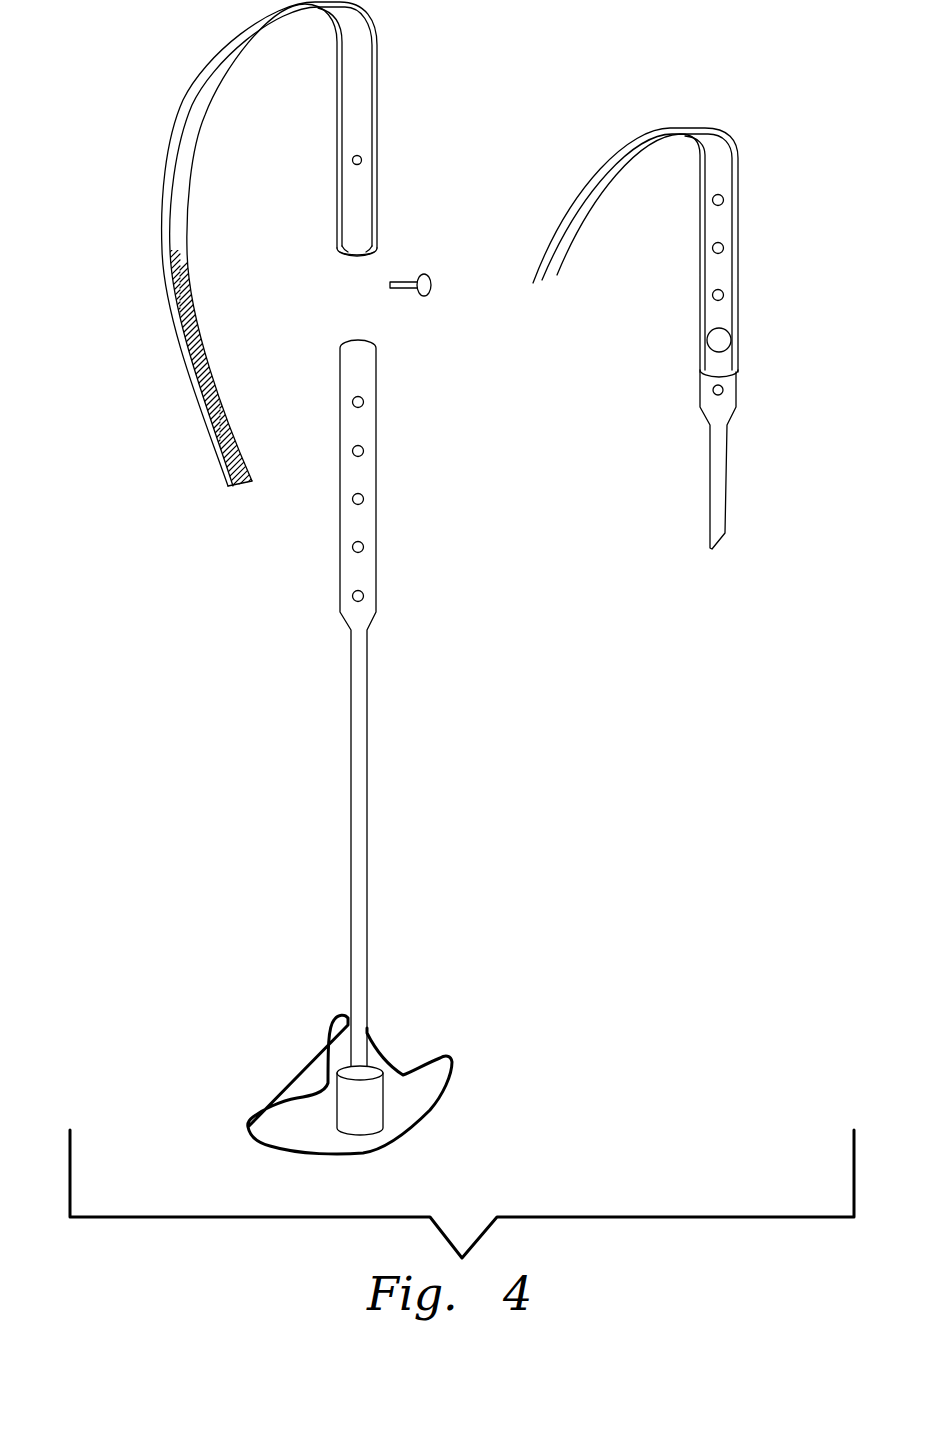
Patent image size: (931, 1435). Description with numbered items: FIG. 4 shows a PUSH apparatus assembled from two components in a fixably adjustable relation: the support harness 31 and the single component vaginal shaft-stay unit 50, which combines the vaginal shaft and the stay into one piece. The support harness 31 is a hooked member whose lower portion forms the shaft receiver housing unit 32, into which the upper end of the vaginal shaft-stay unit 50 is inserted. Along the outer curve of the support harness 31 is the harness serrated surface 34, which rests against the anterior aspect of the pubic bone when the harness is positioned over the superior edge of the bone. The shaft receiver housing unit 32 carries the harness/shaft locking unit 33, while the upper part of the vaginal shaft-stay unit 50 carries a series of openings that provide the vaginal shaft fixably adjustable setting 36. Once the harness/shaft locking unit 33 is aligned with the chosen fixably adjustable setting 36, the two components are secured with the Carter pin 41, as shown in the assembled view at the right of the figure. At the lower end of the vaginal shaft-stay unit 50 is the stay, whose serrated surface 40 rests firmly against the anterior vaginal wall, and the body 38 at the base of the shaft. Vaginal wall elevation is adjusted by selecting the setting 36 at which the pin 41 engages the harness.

The support harness 31 is at (380, 150).
The shaft receiver housing unit 32 is at (360, 247).
The harness/shaft locking unit 33 is at (355, 165).
The harness serrated surface 34 is at (243, 393).
The vaginal shaft fixably adjustable setting 36 is at (364, 548).
The base weight 38 is at (400, 1115).
The serrated surface 40 is at (449, 1092).
The Carter pin 41 is at (432, 293).
The single component vaginal shaft-stay unit 50 is at (367, 792).